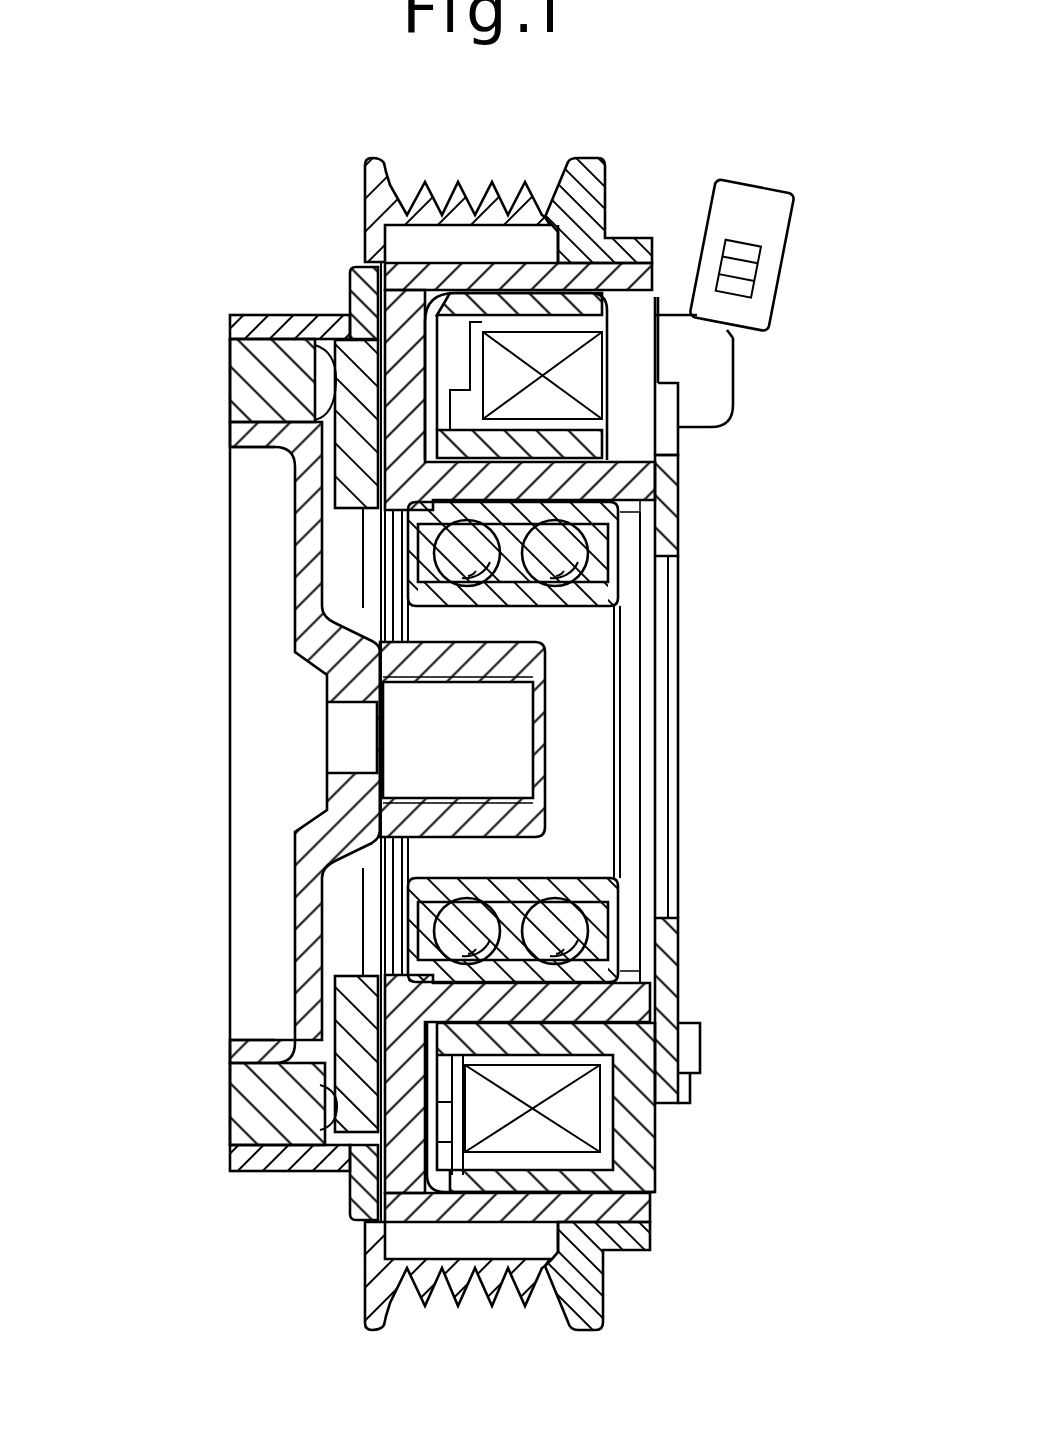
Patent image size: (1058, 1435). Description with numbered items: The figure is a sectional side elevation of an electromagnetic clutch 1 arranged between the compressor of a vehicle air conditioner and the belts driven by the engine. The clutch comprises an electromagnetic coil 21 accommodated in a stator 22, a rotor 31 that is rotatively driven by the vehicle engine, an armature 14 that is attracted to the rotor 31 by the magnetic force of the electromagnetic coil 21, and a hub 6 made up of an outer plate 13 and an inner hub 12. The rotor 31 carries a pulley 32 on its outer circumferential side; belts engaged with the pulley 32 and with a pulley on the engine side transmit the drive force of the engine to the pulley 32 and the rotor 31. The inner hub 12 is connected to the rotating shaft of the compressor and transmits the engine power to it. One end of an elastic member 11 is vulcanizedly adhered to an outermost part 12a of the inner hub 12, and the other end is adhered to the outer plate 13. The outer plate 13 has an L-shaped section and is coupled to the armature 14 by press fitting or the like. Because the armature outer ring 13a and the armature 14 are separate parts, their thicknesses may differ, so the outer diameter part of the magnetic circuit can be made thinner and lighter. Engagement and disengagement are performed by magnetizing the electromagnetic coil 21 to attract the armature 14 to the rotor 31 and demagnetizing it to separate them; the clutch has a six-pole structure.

The electromagnetic clutch 1 is at (752, 600).
The hub 6 is at (200, 432).
The elastic member 11 is at (263, 379).
The inner hub 12 is at (297, 655).
The outermost part 12a is at (263, 445).
The outer plate 13 is at (267, 323).
The armature outer ring 13a is at (363, 288).
The armature 14 is at (325, 445).
The electromagnetic coil 21 is at (582, 373).
The stator 22 is at (598, 464).
The rotor 31 is at (432, 270).
The pulley 32 is at (588, 170).